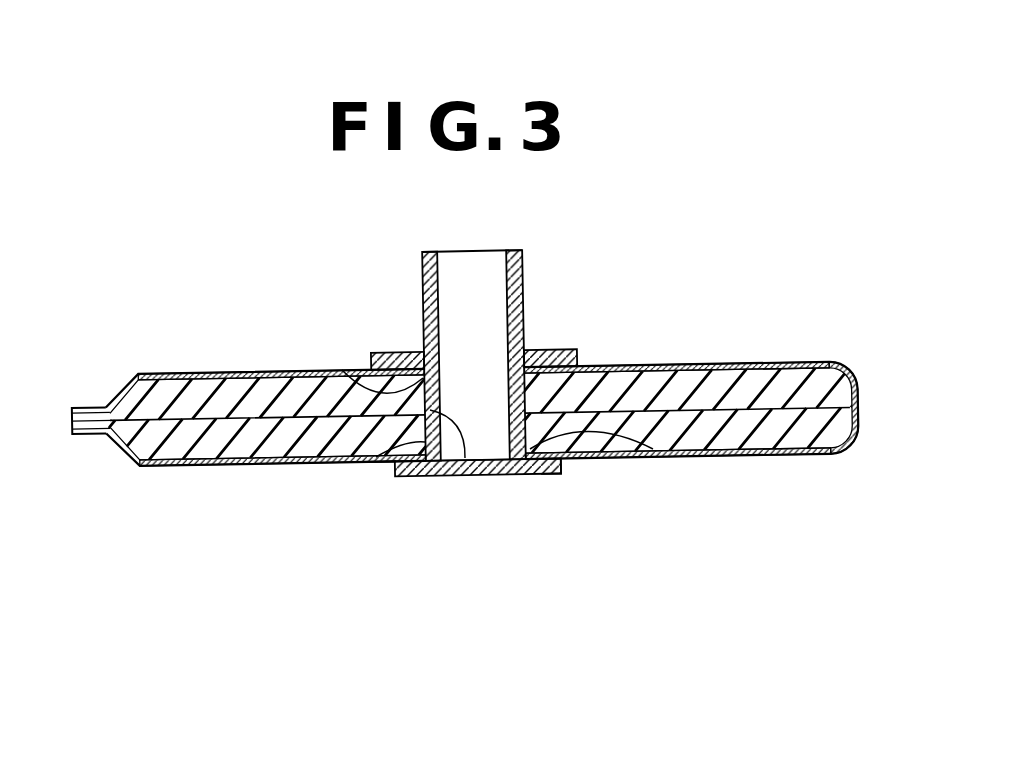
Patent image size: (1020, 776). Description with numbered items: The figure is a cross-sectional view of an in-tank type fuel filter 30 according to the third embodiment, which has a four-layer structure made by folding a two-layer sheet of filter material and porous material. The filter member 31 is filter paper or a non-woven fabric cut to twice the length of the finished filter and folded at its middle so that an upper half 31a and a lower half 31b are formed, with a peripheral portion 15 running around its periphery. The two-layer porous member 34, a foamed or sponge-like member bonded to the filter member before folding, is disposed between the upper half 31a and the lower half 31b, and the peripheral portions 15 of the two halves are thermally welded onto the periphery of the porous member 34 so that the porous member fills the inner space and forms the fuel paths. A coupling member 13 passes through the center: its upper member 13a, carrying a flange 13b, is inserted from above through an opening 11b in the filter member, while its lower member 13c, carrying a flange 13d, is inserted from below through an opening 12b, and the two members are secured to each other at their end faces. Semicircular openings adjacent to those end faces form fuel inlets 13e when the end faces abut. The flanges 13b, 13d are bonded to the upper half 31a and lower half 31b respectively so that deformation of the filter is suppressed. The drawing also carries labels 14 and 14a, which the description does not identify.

The opening 11b is at (421, 350).
The opening 12b is at (381, 464).
The coupling member 13 is at (526, 268).
The upper member 13a is at (526, 322).
The flange 13b is at (527, 348).
The lower member 13c is at (512, 476).
The flange 13d is at (560, 477).
The fuel inlet 13e is at (463, 473).
The absorbing member 14 is at (273, 430).
The end portion of absorbing member 14a is at (345, 375).
The peripheral portion 15 is at (92, 408).
The fuel filter 30 is at (777, 355).
The filter member 31 is at (848, 446).
The upper half 31a is at (207, 372).
The lower half 31b is at (182, 465).
The porous member 34 is at (730, 385).